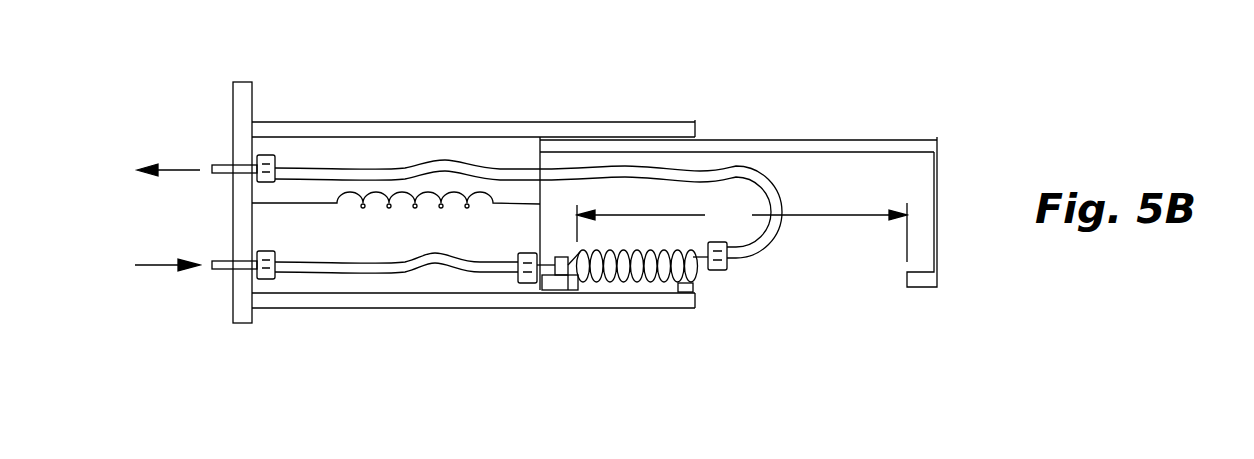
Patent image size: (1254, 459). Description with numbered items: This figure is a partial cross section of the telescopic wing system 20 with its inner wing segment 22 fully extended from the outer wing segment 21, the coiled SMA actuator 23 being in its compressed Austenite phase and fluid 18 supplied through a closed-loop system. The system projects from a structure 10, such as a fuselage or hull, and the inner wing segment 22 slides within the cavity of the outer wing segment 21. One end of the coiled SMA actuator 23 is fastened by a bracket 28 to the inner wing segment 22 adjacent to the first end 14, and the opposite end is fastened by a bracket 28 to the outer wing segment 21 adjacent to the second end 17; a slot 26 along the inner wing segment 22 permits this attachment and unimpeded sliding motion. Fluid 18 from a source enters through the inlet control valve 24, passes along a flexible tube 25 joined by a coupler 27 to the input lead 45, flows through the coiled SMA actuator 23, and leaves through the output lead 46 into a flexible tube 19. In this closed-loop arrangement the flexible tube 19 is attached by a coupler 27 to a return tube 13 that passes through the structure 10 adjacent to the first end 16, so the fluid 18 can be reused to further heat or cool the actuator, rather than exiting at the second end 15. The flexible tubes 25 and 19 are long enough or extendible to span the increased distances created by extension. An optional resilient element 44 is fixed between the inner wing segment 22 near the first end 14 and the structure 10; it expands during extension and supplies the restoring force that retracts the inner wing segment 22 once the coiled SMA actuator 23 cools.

The structure 10 is at (243, 80).
The return tube 13 is at (228, 160).
The first end 14 is at (533, 137).
The second end 15 is at (927, 137).
The first end 16 is at (254, 122).
The second end 17 is at (697, 120).
The fluid 18 is at (180, 167).
The flexible tube 19 is at (733, 168).
The telescopic wing system 20 is at (397, 108).
The outer wing segment 21 is at (560, 121).
The inner wing segment 22 is at (833, 137).
The coiled SMA actuator 23 is at (662, 284).
The inlet control valve 24 is at (223, 258).
The flexible tube 25 is at (377, 277).
The slot 26 is at (742, 232).
The coupler 27 is at (270, 155).
The bracket 28 is at (567, 290).
The resilient element 44 is at (350, 197).
The input lead 45 is at (577, 270).
The output lead 46 is at (697, 262).